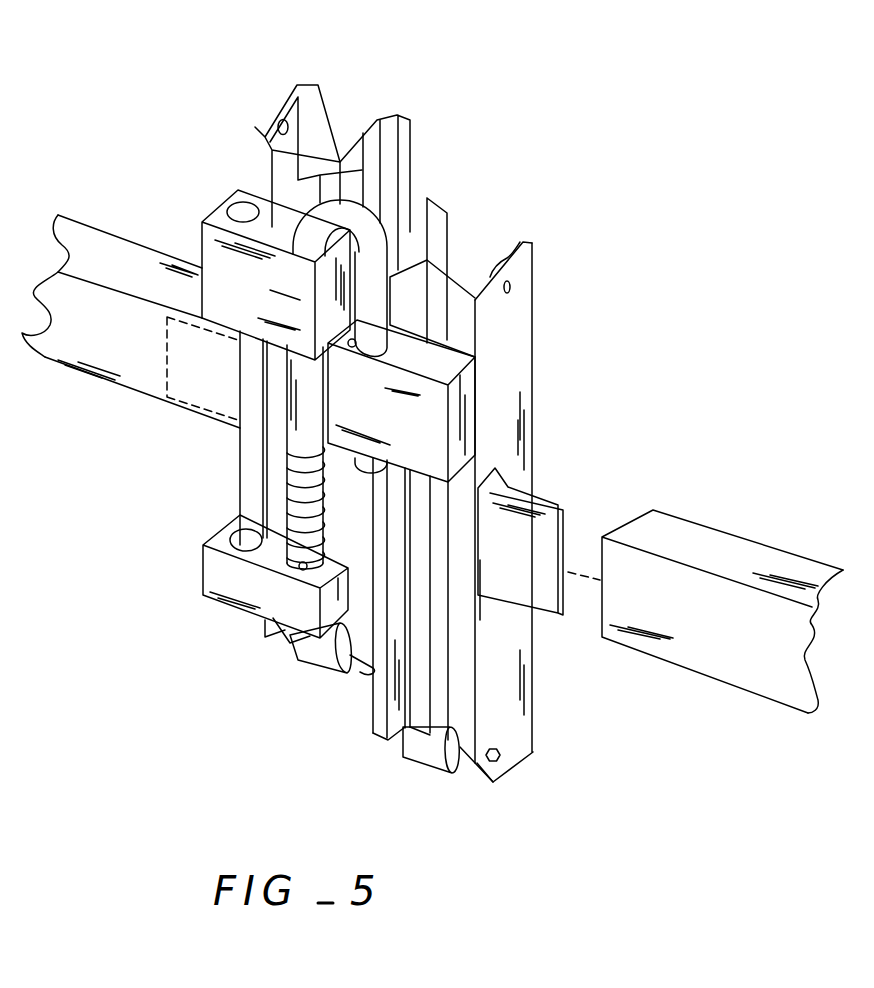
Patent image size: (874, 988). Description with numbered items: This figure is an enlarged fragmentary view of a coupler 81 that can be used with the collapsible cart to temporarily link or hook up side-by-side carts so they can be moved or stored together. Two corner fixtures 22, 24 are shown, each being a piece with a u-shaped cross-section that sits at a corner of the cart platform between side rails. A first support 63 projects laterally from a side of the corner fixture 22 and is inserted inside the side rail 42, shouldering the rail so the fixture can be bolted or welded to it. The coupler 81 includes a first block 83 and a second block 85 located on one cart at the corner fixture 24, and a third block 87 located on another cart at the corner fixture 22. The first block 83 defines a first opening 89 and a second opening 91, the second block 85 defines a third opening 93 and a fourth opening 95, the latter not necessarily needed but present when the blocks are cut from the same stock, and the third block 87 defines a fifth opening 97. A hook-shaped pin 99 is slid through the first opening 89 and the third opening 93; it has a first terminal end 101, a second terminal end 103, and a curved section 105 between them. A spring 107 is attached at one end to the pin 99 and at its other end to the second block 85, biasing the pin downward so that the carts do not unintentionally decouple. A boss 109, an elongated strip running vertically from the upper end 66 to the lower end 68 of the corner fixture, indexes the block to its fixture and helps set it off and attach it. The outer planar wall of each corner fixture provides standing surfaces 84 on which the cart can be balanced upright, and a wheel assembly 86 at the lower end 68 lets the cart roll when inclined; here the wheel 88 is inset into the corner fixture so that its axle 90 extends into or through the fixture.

The corner fixture 22 is at (537, 327).
The corner fixture 24 is at (236, 157).
The side rail 42 is at (707, 553).
The first support 63 is at (205, 415).
The upper end 66 is at (380, 133).
The lower end 68 is at (363, 673).
The coupler 81 is at (160, 186).
The first block 83 is at (230, 290).
The standing surfaces 84 is at (202, 243).
The second block 85 is at (220, 565).
The wheel assemblies 86 is at (302, 664).
The third block 87 is at (413, 418).
The wheel 88 is at (327, 663).
The first opening 89 is at (302, 268).
The axle 90 is at (498, 764).
The second opening 91 is at (240, 210).
The third opening 93 is at (305, 563).
The fourth opening 95 is at (248, 548).
The fifth opening 97 is at (377, 347).
The pin 99 is at (361, 202).
The first terminal end 101 is at (372, 462).
The second terminal end 103 is at (303, 560).
The curved section 105 is at (290, 187).
The spring 107 is at (303, 473).
The boss 109 is at (342, 220).